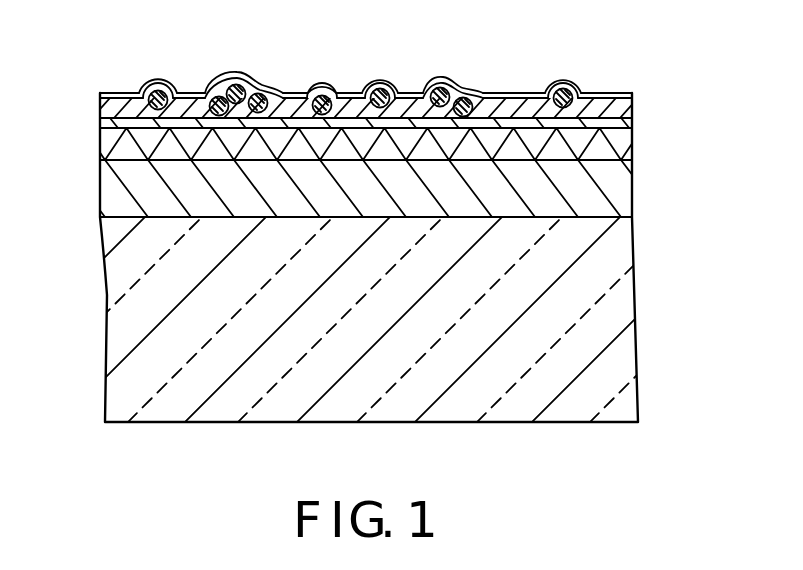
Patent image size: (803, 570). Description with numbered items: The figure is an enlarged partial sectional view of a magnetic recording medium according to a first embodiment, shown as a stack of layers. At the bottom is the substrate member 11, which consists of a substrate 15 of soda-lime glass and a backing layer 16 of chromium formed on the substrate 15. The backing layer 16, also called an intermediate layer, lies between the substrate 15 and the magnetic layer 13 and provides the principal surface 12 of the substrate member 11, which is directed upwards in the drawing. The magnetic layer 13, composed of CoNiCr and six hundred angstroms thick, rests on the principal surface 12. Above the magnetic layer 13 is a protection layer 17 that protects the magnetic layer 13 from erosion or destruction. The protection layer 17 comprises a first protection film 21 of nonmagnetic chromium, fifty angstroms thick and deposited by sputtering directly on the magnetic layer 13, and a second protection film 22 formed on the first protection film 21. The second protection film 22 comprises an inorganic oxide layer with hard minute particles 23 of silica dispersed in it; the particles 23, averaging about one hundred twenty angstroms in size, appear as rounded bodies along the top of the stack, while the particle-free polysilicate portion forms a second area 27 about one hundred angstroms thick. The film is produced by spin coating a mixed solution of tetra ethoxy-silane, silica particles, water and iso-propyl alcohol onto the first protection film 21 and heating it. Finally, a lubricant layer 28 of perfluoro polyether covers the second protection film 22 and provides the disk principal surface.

The substrate member 11 is at (95, 158).
The principal surface 12 is at (345, 161).
The magnetic layer 13 is at (633, 150).
The substrate 15 is at (629, 339).
The backing layer 16 is at (622, 200).
The protection layer 17 is at (92, 100).
The first protection film 21 is at (633, 127).
The second protection film 22 is at (633, 108).
The hard minute particles 23 is at (432, 82).
The second area 27 is at (503, 110).
The lubricant layer 28 is at (603, 93).